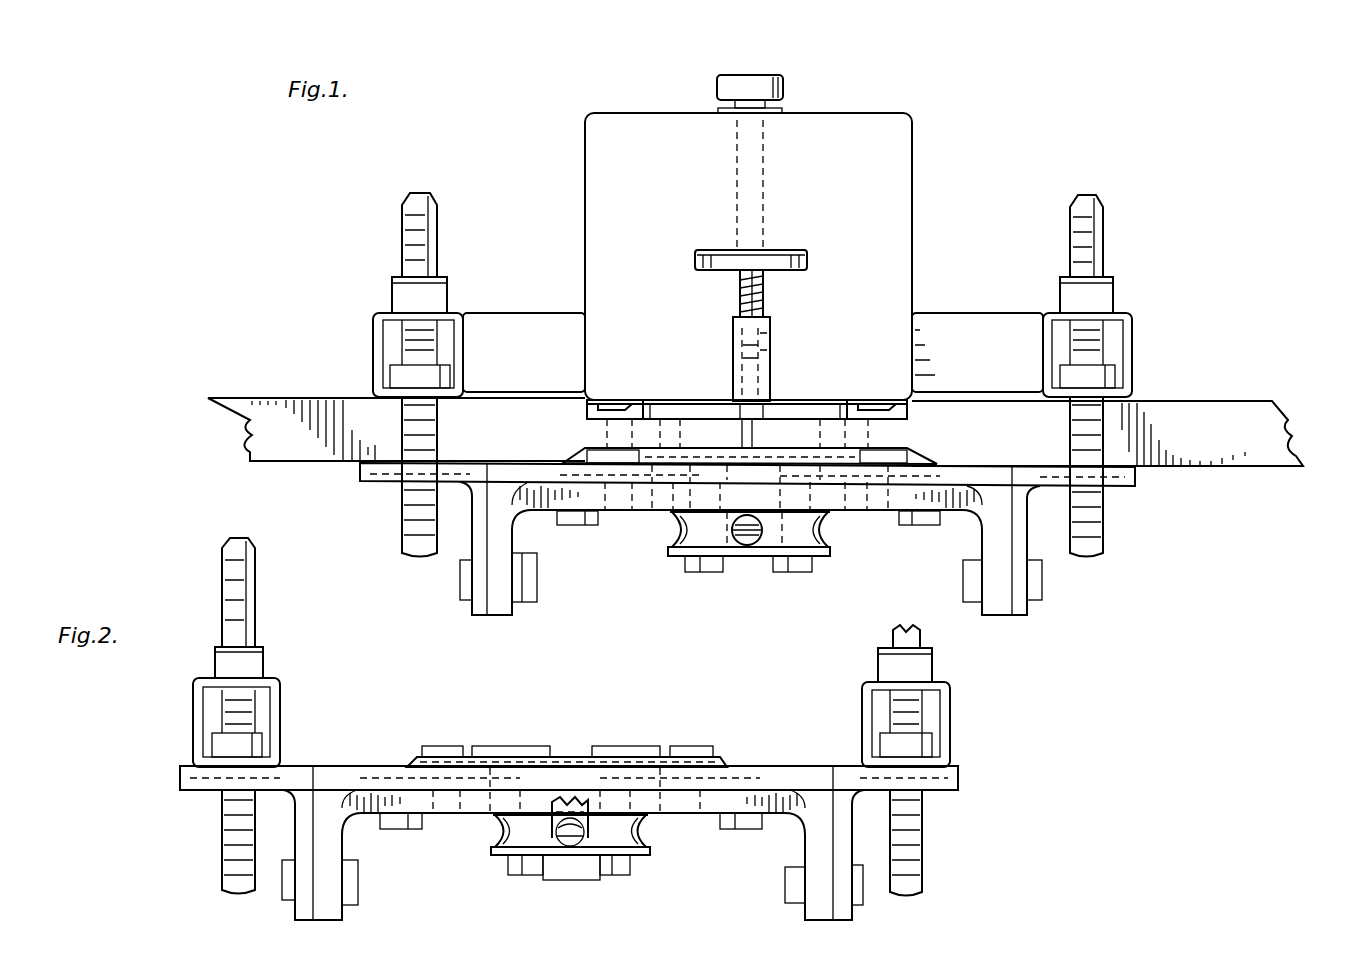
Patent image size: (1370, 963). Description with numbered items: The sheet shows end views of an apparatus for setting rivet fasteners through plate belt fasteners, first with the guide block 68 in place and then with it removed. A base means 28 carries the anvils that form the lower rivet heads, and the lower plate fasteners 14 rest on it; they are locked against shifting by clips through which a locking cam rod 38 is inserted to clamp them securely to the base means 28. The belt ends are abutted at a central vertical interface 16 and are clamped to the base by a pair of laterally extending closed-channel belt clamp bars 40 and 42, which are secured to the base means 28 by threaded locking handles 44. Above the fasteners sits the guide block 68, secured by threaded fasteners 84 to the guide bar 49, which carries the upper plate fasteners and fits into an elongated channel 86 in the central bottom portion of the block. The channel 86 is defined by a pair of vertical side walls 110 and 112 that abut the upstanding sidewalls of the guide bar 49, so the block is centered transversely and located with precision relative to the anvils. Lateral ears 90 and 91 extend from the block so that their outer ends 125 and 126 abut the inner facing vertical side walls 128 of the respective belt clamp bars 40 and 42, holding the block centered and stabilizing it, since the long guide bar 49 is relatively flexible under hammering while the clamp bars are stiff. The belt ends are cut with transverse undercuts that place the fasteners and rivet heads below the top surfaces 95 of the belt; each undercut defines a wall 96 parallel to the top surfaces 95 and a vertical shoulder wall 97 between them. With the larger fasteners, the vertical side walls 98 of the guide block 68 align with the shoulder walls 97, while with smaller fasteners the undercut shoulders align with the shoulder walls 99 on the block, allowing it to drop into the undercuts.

In FIG. 2, the lower plate fasteners 14 is at (725, 757).
In FIG. 1, the central vertical interface 16 is at (752, 437).
In FIG. 1, the base means 28 is at (1140, 480).
In FIG. 1, the locking cam rod 38 is at (748, 548).
In FIG. 2, the locking cam rod 38 is at (580, 880).
In FIG. 1, the belt clamp bar 40 is at (372, 322).
In FIG. 1, the belt clamp bar 42 is at (1134, 345).
In FIG. 1, the threaded locking handles 44 is at (437, 245).
In FIG. 2, the threaded locking handles 44 is at (258, 588).
In FIG. 1, the guide bar 49 is at (768, 370).
In FIG. 1, the guide block 68 is at (922, 168).
In FIG. 1, the threaded fasteners 84 is at (786, 86).
In FIG. 1, the channel 86 is at (748, 343).
In FIG. 1, the lateral ear 90 is at (538, 325).
In FIG. 1, the lateral ear 91 is at (968, 328).
In FIG. 1, the top surfaces of the belt ends 95 is at (300, 397).
In FIG. 1, the undercut wall 96 is at (700, 405).
In FIG. 1, the vertical shoulder wall 97 is at (586, 410).
In FIG. 1, the vertical side walls 98 is at (584, 226).
In FIG. 1, the shoulder walls 99 is at (660, 395).
In FIG. 1, the vertical side wall 110 is at (734, 322).
In FIG. 1, the vertical side wall 112 is at (772, 325).
In FIG. 1, the outer end 125 is at (464, 358).
In FIG. 1, the outer end 126 is at (1052, 368).
In FIG. 1, the inner facing vertical side walls 128 is at (462, 322).